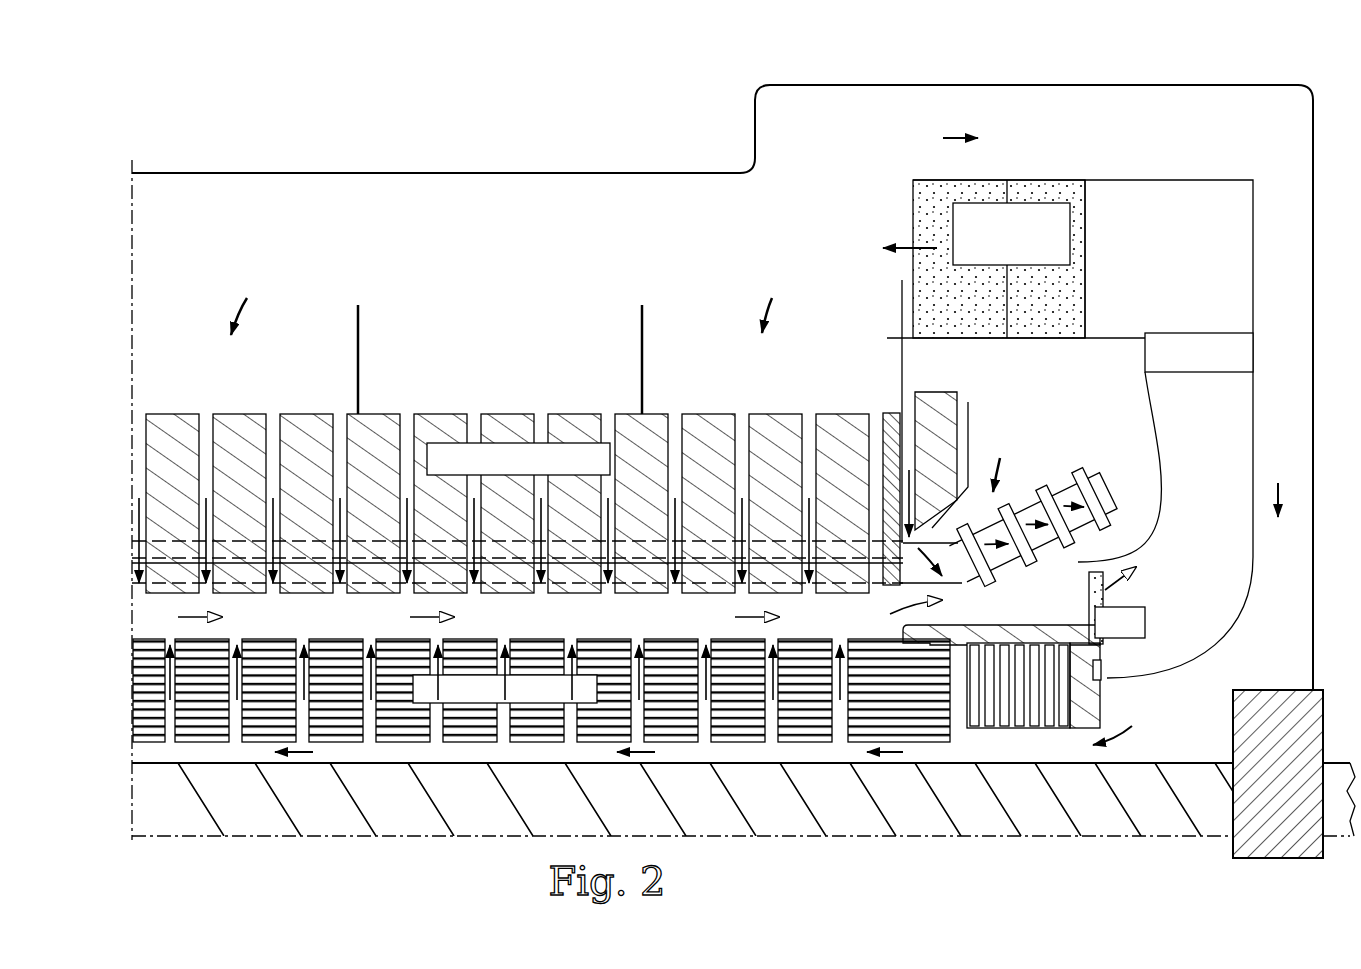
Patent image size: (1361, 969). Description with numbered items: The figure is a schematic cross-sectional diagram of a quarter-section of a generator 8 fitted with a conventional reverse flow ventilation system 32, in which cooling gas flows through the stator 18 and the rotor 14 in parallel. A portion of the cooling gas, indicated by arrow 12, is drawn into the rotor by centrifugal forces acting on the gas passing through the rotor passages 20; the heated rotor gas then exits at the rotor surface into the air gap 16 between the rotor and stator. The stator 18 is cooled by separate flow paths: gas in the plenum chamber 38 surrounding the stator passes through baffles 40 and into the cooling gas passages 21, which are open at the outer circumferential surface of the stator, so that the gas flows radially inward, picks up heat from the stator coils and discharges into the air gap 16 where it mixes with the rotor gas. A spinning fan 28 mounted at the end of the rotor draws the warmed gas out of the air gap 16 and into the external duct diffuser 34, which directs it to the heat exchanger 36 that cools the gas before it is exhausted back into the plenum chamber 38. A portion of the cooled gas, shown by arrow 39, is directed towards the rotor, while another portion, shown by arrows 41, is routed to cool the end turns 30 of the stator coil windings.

The generator 8 is at (1213, 845).
The flow of cooling gases 12 is at (490, 322).
The rotor 14 is at (460, 690).
The air gap 16 is at (162, 618).
The stator 18 is at (548, 443).
The rotor passages 20 is at (300, 745).
The cooling gas passages 21 is at (410, 414).
The fan 28 is at (1105, 598).
The end turns 30 is at (1110, 500).
The reverse flow ventilation system 32 is at (172, 366).
The external duct diffuser 34 is at (1162, 478).
The heat exchanger 36 is at (1045, 215).
The plenum chamber 38 is at (625, 220).
The portion of cooled gas 39 is at (787, 195).
The baffles 40 is at (358, 360).
The cooling gas portion 41 is at (903, 354).